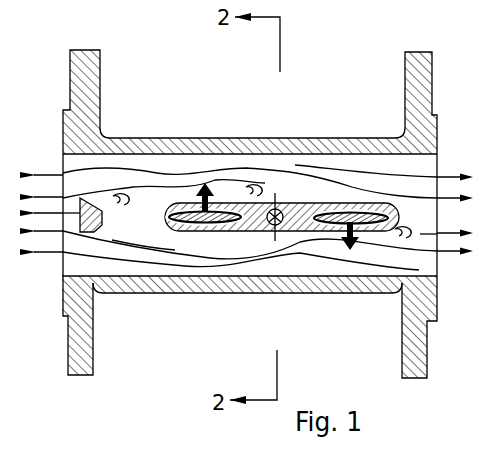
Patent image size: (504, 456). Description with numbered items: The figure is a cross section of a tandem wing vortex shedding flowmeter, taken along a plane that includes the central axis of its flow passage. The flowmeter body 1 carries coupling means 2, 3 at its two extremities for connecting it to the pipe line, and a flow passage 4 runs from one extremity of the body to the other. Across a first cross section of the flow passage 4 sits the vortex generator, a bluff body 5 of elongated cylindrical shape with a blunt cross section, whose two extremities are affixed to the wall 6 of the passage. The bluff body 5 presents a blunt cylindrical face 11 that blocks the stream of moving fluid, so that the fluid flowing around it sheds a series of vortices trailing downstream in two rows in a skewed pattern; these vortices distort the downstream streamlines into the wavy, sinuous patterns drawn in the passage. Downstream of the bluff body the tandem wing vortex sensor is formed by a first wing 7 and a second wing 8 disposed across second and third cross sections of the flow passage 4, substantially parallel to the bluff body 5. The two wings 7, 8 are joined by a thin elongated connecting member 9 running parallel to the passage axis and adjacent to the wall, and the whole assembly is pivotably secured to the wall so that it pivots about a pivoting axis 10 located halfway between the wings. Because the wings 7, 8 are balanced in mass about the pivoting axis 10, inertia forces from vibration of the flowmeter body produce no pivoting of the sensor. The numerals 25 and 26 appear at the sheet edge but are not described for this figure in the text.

The flowmeter body 1 is at (252, 214).
The coupling means 2 is at (63, 127).
The coupling means 3 is at (437, 136).
The flow passage 4 is at (149, 157).
The bluff body 5 is at (95, 229).
The wall 6 is at (172, 284).
The first wing 7 is at (190, 209).
The second wing 8 is at (343, 211).
The connecting member 9 is at (282, 162).
The pivoting axis 10 is at (276, 209).
The blunt cylindrical face 11 is at (80, 213).
The element 25 is at (158, 455).
The element 26 is at (116, 455).